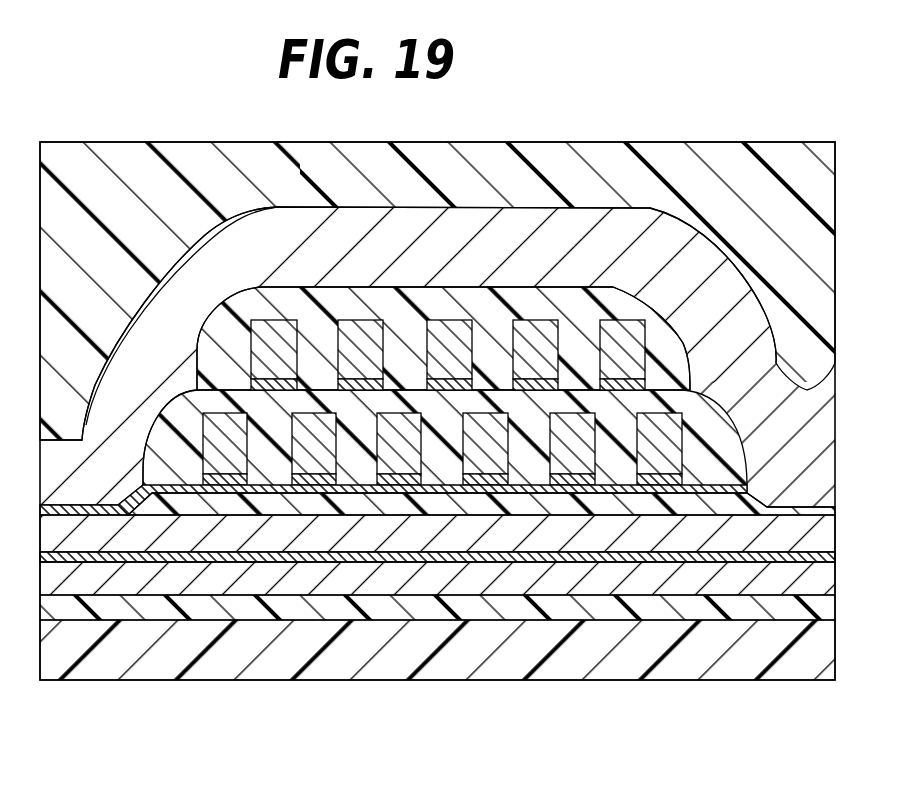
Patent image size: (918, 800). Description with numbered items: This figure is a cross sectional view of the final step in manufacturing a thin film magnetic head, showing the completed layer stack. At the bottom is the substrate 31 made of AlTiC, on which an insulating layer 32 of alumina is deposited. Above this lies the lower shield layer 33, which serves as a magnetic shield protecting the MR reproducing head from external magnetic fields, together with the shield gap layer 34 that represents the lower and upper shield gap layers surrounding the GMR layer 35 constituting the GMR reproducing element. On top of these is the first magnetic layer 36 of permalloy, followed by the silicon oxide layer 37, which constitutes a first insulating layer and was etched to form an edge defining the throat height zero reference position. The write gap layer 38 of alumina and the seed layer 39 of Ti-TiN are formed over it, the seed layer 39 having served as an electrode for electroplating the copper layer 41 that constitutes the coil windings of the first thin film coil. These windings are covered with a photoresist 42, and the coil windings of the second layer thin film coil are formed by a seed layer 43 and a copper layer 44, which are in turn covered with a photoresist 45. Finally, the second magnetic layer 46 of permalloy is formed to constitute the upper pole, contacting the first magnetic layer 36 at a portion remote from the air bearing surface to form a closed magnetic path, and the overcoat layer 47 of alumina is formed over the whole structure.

The substrate 31 is at (240, 653).
The insulating layer 32 is at (290, 617).
The lower shield layer 33 is at (353, 580).
The shield gap layer 34 is at (405, 555).
The GMR layer 35 is at (95, 555).
The first magnetic layer 36 is at (460, 530).
The silicon oxide layer 37 is at (530, 505).
The write gap layer 38 is at (108, 512).
The seed layer 39 is at (665, 485).
The copper layer 41 is at (577, 420).
The photoresist 42 is at (695, 420).
The seed layer 43 is at (652, 390).
The copper layer 44 is at (443, 333).
The photoresist 45 is at (320, 297).
The second magnetic layer 46 is at (525, 223).
The overcoat layer 47 is at (241, 158).